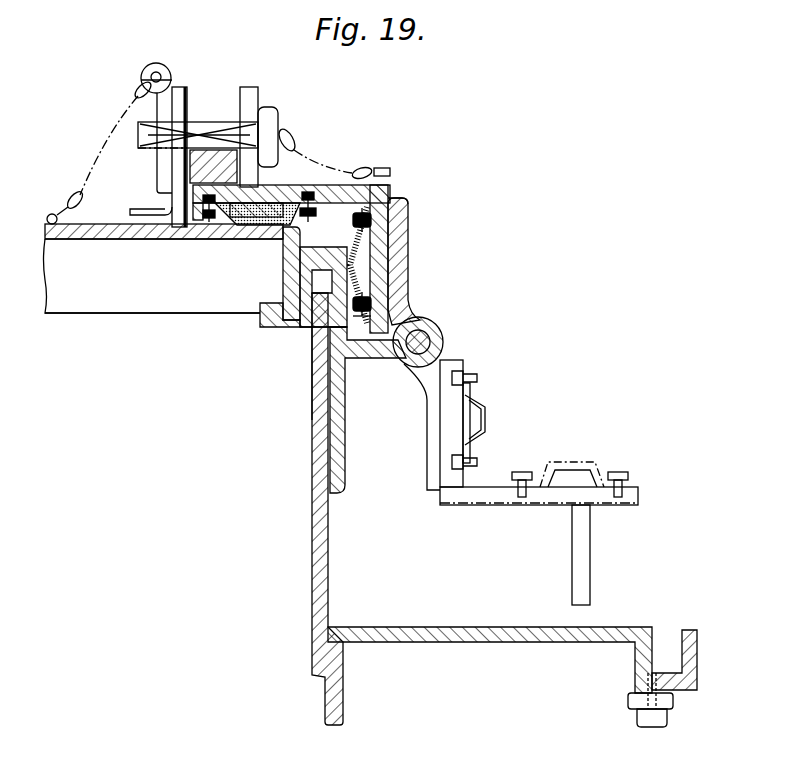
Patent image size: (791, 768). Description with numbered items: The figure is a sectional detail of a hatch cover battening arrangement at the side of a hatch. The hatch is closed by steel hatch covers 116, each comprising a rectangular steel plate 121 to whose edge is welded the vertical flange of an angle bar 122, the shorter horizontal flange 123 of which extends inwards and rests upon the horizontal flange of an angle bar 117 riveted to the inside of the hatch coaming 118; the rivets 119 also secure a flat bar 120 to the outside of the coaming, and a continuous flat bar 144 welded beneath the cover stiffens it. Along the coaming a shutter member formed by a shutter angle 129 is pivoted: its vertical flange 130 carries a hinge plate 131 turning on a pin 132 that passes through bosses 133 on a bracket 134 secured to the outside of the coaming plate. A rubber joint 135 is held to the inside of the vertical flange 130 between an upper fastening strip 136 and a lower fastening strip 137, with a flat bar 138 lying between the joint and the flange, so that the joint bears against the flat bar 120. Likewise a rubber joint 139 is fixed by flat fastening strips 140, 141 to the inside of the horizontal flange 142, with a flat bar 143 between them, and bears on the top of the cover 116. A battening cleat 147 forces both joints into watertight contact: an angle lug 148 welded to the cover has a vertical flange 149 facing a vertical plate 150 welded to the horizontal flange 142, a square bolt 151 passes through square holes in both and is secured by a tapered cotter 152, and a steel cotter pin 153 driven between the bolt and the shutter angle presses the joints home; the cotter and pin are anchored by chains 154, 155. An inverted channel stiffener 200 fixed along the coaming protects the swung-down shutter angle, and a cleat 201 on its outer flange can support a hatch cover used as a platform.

The steel hatch cover 116 is at (190, 300).
The angle bar 117 is at (297, 322).
The hatch coaming 118 is at (320, 571).
The rivet 119 is at (310, 278).
The flat bar 120 is at (316, 385).
The rectangular steel plate 121 is at (100, 232).
The angle bar 122 is at (287, 257).
The horizontal flange 123 is at (265, 310).
The shutter angle 129 is at (408, 200).
The vertical flange 130 is at (395, 238).
The hinge plate 131 is at (398, 284).
The pin 132 is at (430, 338).
The boss 133 is at (441, 332).
The bracket 134 is at (333, 473).
The rubber joint 135 is at (372, 224).
The upper fastening strip 136 is at (382, 170).
The lower fastening strip 137 is at (361, 322).
The flat bar 138 is at (365, 262).
The rubber joint 139 is at (250, 228).
The flat fastening strip 140 is at (210, 215).
The flat fastening strip 141 is at (318, 213).
The horizontal flange 142 is at (288, 212).
The flat bar 143 is at (265, 203).
The continuous flat bar 144 is at (100, 314).
The battening cleat 147 is at (198, 99).
The angle lug 148 is at (140, 214).
The vertical flange 149 is at (184, 100).
The vertical plate 150 is at (247, 100).
The square bolt 151 is at (212, 130).
The tapered cotter 152 is at (163, 113).
The steel cotter pin 153 is at (225, 173).
The chain 154 is at (78, 195).
The chain 155 is at (355, 168).
The inverted channel stiffener 200 is at (513, 634).
The cleat 201 is at (688, 655).